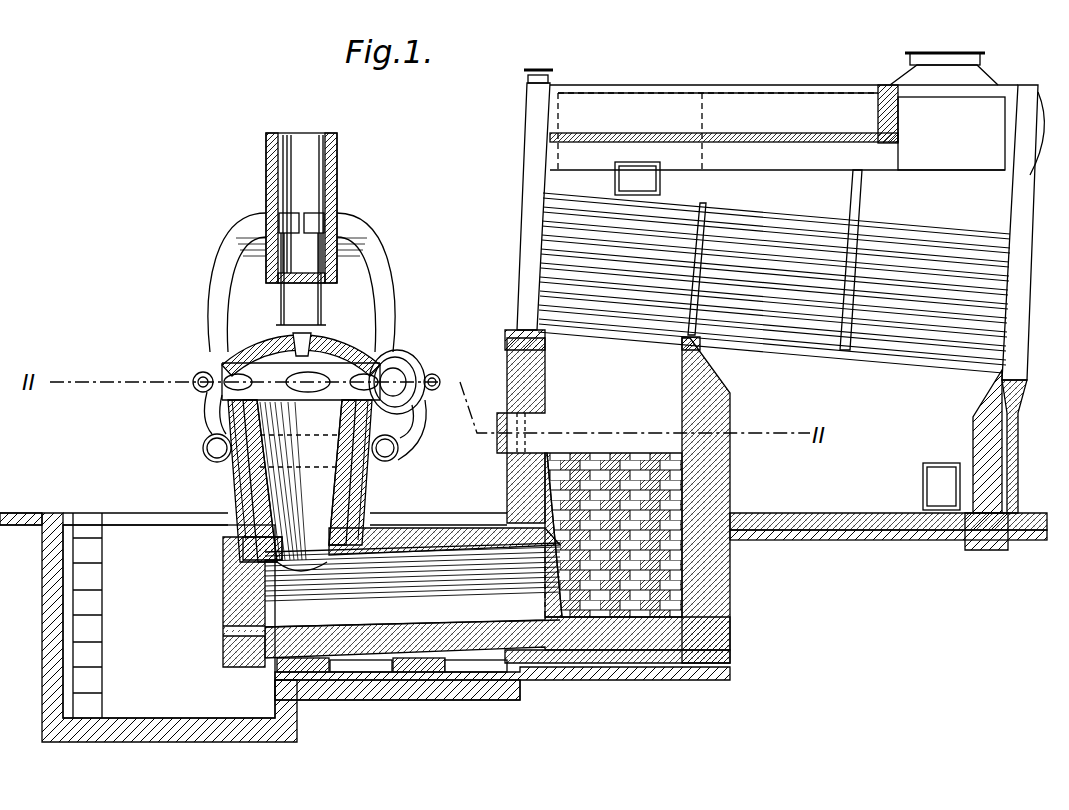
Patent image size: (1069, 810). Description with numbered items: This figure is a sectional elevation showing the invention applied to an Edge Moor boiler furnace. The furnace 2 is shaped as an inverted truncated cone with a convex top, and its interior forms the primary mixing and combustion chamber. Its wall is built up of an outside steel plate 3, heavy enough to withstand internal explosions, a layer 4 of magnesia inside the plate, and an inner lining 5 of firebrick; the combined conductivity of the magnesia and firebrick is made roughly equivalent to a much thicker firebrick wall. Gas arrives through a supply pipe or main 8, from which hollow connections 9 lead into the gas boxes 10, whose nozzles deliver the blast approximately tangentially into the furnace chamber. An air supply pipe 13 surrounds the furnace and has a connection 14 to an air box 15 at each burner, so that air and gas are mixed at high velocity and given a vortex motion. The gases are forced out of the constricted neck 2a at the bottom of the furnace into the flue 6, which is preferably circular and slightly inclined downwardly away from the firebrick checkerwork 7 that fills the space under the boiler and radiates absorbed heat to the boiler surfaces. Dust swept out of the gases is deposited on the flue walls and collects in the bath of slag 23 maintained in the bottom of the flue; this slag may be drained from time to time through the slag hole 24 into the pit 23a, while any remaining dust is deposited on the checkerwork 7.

The furnace 2 is at (263, 480).
The constricted neck 2a is at (300, 486).
The outside steel plate 3 is at (245, 500).
The layer of magnesia 4 is at (360, 494).
The inner lining of firebrick 5 is at (362, 512).
The flue 6 is at (412, 585).
The firebrick checkerwork 7 is at (665, 592).
The supply pipe or main 8 is at (292, 162).
The hollow connections 9 is at (232, 290).
The gas boxes 10 is at (406, 366).
The air supply pipe 13 is at (208, 448).
The connection 14 is at (214, 430).
The air box 15 is at (205, 374).
The bath of slag 23 is at (329, 630).
The pit 23a is at (169, 615).
The slag hole 24 is at (232, 634).